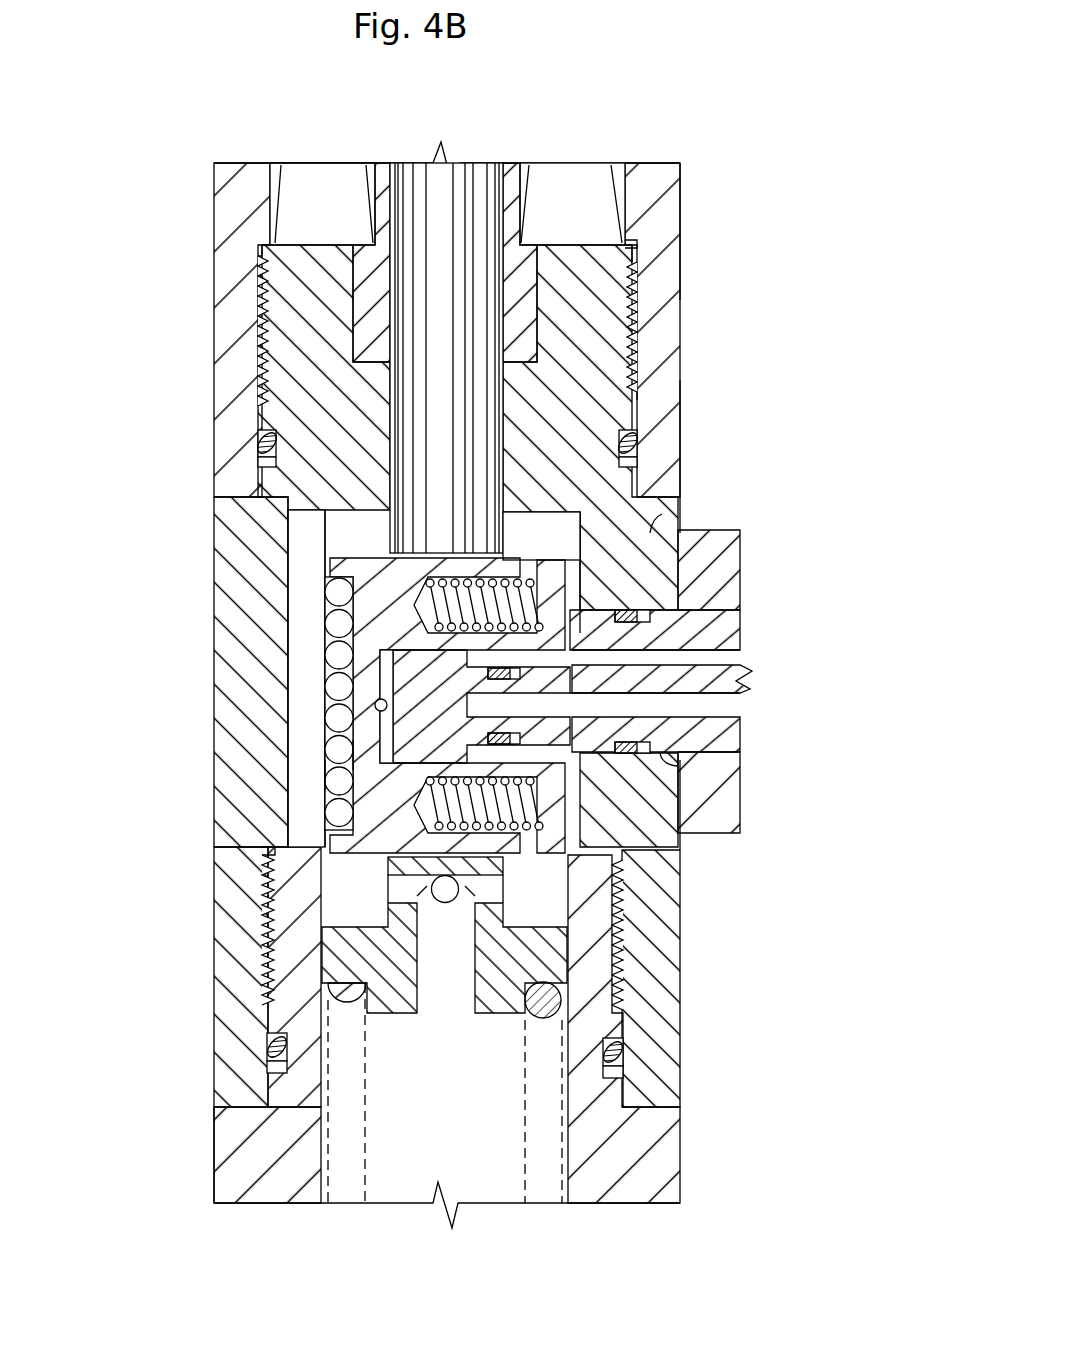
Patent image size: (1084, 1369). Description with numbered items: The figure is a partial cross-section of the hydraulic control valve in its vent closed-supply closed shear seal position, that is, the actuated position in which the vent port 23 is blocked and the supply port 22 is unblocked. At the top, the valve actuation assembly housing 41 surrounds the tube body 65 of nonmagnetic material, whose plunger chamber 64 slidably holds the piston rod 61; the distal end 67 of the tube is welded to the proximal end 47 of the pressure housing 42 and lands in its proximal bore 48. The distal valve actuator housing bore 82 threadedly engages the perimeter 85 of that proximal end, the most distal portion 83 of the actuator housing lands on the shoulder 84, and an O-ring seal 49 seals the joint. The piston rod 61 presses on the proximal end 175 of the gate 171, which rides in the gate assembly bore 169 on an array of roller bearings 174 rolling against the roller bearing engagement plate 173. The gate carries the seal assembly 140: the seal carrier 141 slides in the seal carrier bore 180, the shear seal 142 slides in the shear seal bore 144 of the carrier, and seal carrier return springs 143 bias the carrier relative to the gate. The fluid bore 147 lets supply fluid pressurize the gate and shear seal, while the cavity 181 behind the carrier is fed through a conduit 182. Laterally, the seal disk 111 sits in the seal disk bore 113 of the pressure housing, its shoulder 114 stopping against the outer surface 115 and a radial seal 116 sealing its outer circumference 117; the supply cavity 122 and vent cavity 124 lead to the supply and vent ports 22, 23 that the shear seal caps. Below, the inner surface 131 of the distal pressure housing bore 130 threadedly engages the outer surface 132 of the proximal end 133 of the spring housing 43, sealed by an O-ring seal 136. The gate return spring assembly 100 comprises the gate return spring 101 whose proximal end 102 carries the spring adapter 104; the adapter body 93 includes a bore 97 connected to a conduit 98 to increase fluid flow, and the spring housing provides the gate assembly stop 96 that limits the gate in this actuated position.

The supply port 22 is at (715, 651).
The vent port 23 is at (737, 729).
The valve actuation assembly housing 41 is at (692, 212).
The pressure housing 42 is at (598, 274).
The spring housing 43 is at (253, 1154).
The proximal end of the pressure housing 47 is at (683, 180).
The proximal bore of the pressure housing 48 is at (634, 288).
The O-ring seal 49 is at (637, 446).
The piston rod 61 is at (481, 173).
The plunger chamber 64 is at (401, 187).
The tube body 65 is at (579, 233).
The distal end of the tube body 67 is at (368, 149).
The distal valve actuator housing bore 82 is at (258, 440).
The most distal portion of the valve actuator housing 83 is at (696, 422).
The shoulder 84 is at (652, 520).
The perimeter of the pressure housing proximal end 85 is at (630, 322).
The body of the spring adapter 93 is at (296, 962).
The gate assembly stop 96 is at (608, 940).
The bore of the spring adapter 97 is at (623, 1063).
The conduit 98 is at (652, 1052).
The gate return spring assembly 100 is at (200, 1040).
The gate return spring 101 is at (550, 1000).
The proximal end of the gate return spring 102 is at (343, 975).
The spring adapter 104 is at (357, 928).
The seal disk 111 is at (710, 838).
The seal disk bore 113 is at (688, 631).
The shoulder of the seal disk 114 is at (690, 801).
The outer surface of the pressure housing 115 is at (656, 979).
The radial seal 116 is at (636, 612).
The outer circumference of the seal disk 117 is at (645, 750).
The supply cavity 122 is at (728, 657).
The vent cavity 124 is at (728, 709).
The distal pressure housing bore 130 is at (262, 851).
The inner surface of the distal pressure housing bore 131 is at (270, 1027).
The outer surface of the spring housing proximal end 132 is at (250, 981).
The proximal end of the spring housing 133 is at (640, 957).
The O-ring seal 136 is at (270, 1052).
The seal assembly 140 is at (550, 655).
The seal carrier 141 is at (335, 770).
The shear seal 142 is at (756, 682).
The seal carrier return springs 143 is at (528, 576).
The shear seal bore 144 is at (400, 672).
The fluid bore 147 is at (360, 758).
The gate assembly bore 169 is at (310, 560).
The gate 171 is at (306, 531).
The roller bearing engagement plate 173 is at (305, 795).
The roller bearings 174 is at (335, 593).
The proximal end of the gate 175 is at (270, 490).
The seal carrier bore 180 is at (682, 789).
The cavity 181 is at (392, 690).
The conduit 182 is at (375, 708).